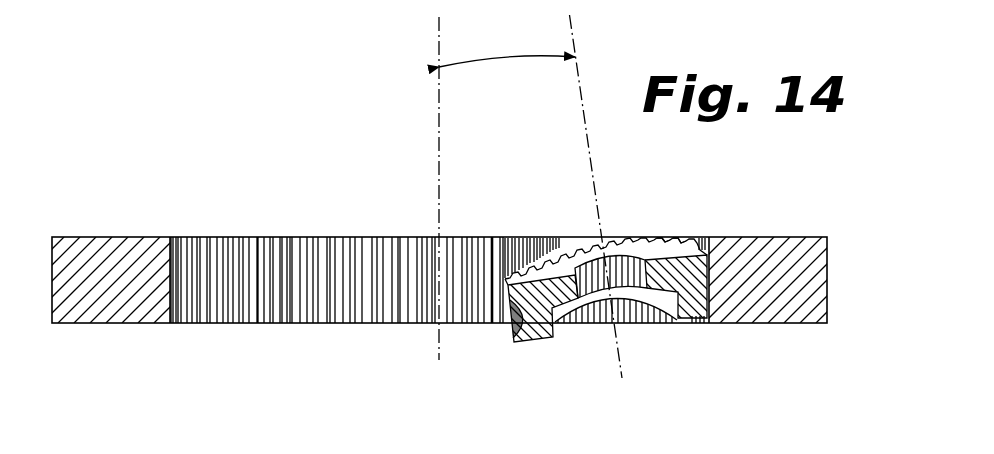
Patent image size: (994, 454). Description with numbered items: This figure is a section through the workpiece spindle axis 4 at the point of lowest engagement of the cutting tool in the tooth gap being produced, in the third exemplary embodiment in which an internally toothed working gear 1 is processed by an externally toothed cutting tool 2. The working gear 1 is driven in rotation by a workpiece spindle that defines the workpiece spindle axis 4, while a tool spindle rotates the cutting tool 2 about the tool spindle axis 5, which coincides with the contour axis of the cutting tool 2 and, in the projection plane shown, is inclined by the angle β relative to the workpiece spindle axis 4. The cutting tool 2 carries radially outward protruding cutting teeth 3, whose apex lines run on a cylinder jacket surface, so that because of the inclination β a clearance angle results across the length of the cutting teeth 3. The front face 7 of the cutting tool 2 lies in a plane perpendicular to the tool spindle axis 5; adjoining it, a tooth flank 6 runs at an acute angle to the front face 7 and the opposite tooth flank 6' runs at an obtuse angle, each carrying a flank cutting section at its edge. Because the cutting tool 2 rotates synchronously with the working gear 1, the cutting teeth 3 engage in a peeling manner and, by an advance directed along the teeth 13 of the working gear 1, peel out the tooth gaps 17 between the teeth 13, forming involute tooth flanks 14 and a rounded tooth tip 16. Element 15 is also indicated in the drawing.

The working gear 1 is at (117, 232).
The cutting tool 2 is at (573, 244).
The cutting teeth 3 is at (507, 337).
The workpiece spindle axis 4 is at (436, 217).
The tool spindle axis 5 is at (605, 220).
The tooth flank 6 is at (670, 194).
The tooth flank 6' is at (697, 194).
The front face 7 is at (693, 321).
The teeth 13 is at (445, 245).
The tooth flanks 14 is at (490, 248).
The lamella 15 is at (378, 238).
The tooth tip 16 is at (318, 238).
The tooth gaps 17 is at (284, 238).